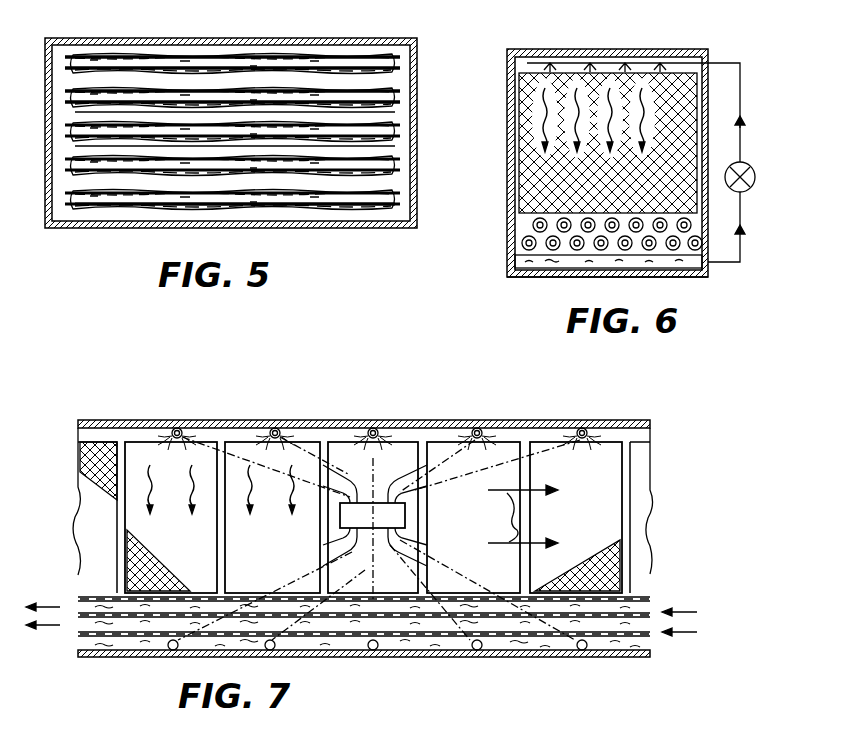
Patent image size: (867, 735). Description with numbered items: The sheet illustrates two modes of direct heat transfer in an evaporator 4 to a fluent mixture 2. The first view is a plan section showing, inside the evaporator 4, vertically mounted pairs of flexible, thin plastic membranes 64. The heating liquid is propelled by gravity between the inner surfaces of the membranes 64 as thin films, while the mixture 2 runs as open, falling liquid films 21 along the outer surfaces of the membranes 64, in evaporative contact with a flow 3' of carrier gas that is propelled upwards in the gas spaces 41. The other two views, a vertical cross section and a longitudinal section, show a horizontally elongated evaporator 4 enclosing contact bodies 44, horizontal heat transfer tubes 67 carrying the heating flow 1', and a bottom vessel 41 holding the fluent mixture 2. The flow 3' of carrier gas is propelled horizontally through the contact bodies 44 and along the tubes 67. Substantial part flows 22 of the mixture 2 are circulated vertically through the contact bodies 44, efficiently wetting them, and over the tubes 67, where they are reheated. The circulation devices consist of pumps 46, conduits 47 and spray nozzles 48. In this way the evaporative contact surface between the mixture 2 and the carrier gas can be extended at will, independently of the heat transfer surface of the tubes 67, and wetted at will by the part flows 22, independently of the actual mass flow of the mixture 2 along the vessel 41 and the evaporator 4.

In FIG. 5, the flow of liquid 1' is at (232, 58).
In FIG. 7, the flow of liquid 1' is at (361, 600).
In FIG. 5, the mixture 2 is at (295, 188).
In FIG. 6, the mixture 2 is at (540, 268).
In FIG. 7, the mixture 2 is at (555, 650).
In FIG. 5, the falling liquid films 21 is at (335, 212).
In FIG. 6, the part flows 22 is at (740, 238).
In FIG. 7, the part flows 22 is at (450, 580).
In FIG. 5, the flow of carrier gas 3' is at (207, 138).
In FIG. 6, the flow of carrier gas 3' is at (583, 143).
In FIG. 7, the flow of carrier gas 3' is at (529, 516).
In FIG. 5, the evaporator 4 is at (313, 44).
In FIG. 6, the evaporator 4 is at (588, 50).
In FIG. 7, the evaporator 4 is at (357, 422).
In FIG. 5, the gas spaces 41 is at (190, 80).
In FIG. 6, the gas spaces 41 is at (683, 277).
In FIG. 7, the gas spaces 41 is at (482, 656).
In FIG. 6, the contact bodies 44 is at (680, 124).
In FIG. 7, the contact bodies 44 is at (364, 517).
In FIG. 6, the pumps 46 is at (747, 166).
In FIG. 7, the pumps 46 is at (408, 520).
In FIG. 6, the conduits 47 is at (746, 56).
In FIG. 6, the spray nozzles 48 is at (674, 50).
In FIG. 5, the flexible thin plastic membranes 64 is at (350, 62).
In FIG. 6, the horizontal heat transfer tubes 67 is at (529, 241).
In FIG. 7, the horizontal heat transfer tubes 67 is at (400, 610).